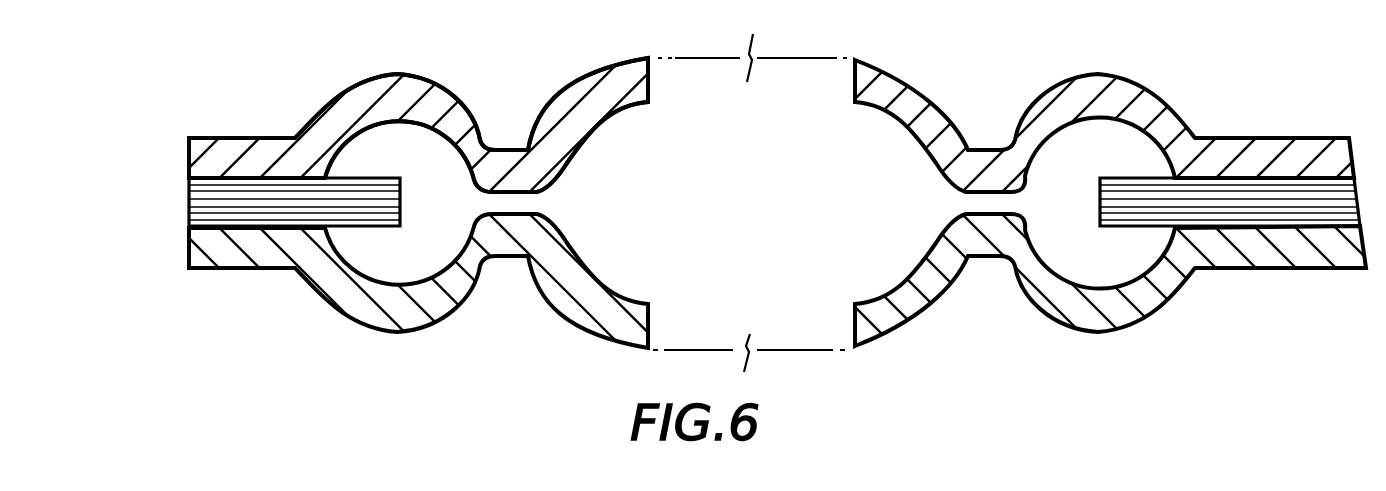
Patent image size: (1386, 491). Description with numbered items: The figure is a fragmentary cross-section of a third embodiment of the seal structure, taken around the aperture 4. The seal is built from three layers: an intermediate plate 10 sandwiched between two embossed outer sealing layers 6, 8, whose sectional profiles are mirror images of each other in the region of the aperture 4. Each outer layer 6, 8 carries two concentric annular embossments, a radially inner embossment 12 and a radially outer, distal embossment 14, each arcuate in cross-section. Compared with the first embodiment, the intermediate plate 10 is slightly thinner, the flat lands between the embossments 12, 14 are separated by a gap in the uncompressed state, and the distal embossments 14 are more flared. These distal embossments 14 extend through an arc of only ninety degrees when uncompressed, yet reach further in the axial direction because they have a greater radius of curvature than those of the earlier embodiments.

The aperture 4 is at (758, 214).
The outer sealing layer 6 is at (373, 77).
The outer sealing layer 8 is at (359, 328).
The intermediate plate 10 is at (252, 148).
The annular embossment 12 is at (413, 87).
The distal embossment 14 is at (593, 83).